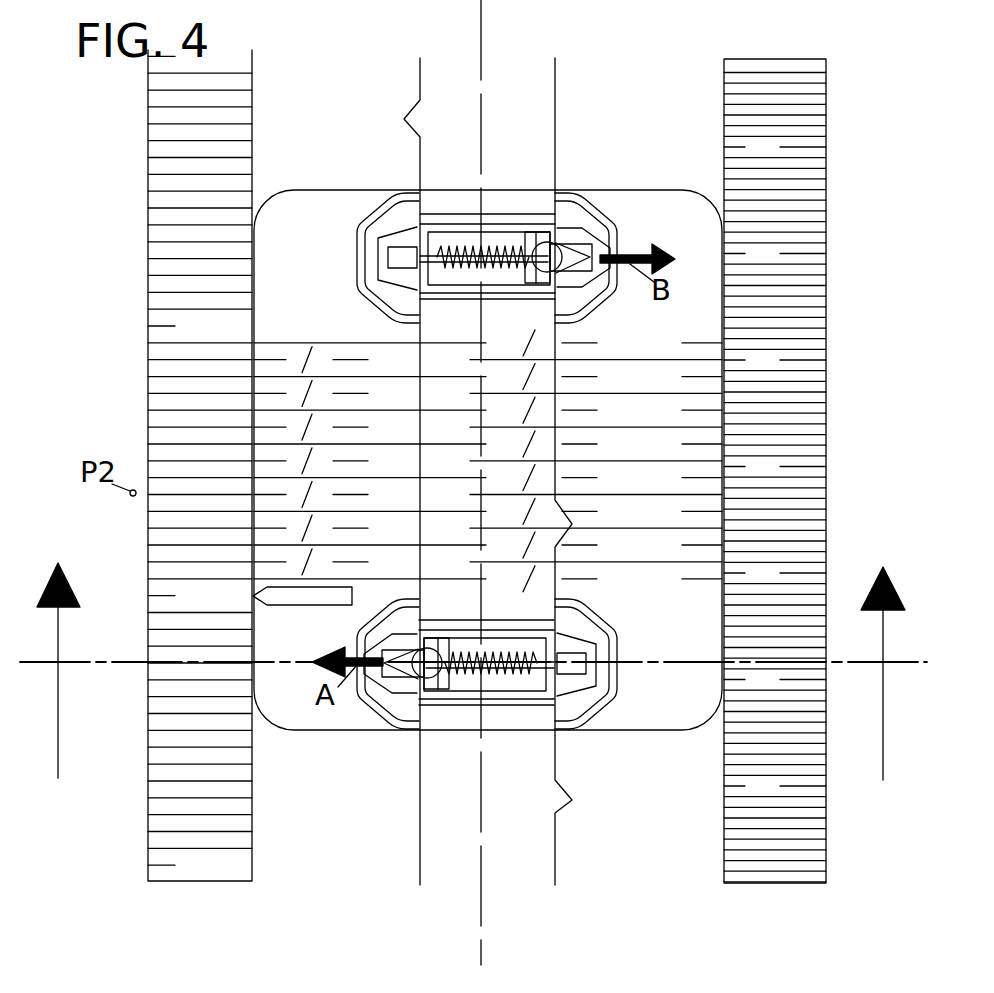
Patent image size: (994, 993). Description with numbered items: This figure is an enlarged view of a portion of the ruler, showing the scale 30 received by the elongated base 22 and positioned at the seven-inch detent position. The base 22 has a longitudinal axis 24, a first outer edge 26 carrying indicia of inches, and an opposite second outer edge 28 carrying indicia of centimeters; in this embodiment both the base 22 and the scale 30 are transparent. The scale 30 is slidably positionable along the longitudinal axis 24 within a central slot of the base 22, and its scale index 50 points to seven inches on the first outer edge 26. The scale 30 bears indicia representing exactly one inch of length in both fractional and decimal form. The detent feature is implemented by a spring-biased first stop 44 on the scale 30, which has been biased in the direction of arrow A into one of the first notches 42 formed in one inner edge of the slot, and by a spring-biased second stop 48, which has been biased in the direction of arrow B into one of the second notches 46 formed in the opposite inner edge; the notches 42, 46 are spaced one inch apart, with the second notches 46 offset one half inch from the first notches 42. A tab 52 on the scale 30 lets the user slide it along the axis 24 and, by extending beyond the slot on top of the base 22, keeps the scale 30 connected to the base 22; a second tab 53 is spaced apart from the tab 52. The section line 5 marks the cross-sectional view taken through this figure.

The section line 5- 5 is at (471, 692).
The elongated base 22 is at (595, 102).
The longitudinal axis 24 is at (480, 925).
The first outer edge 26 is at (147, 323).
The second outer edge 28 is at (826, 262).
The scale 30 is at (335, 188).
The first notches 42 is at (400, 655).
The first stop 44 is at (398, 672).
The second notches 46 is at (578, 252).
The second stop 48 is at (567, 258).
The scale index 50 is at (280, 595).
The tab 52 is at (518, 697).
The second tab 53 is at (507, 223).